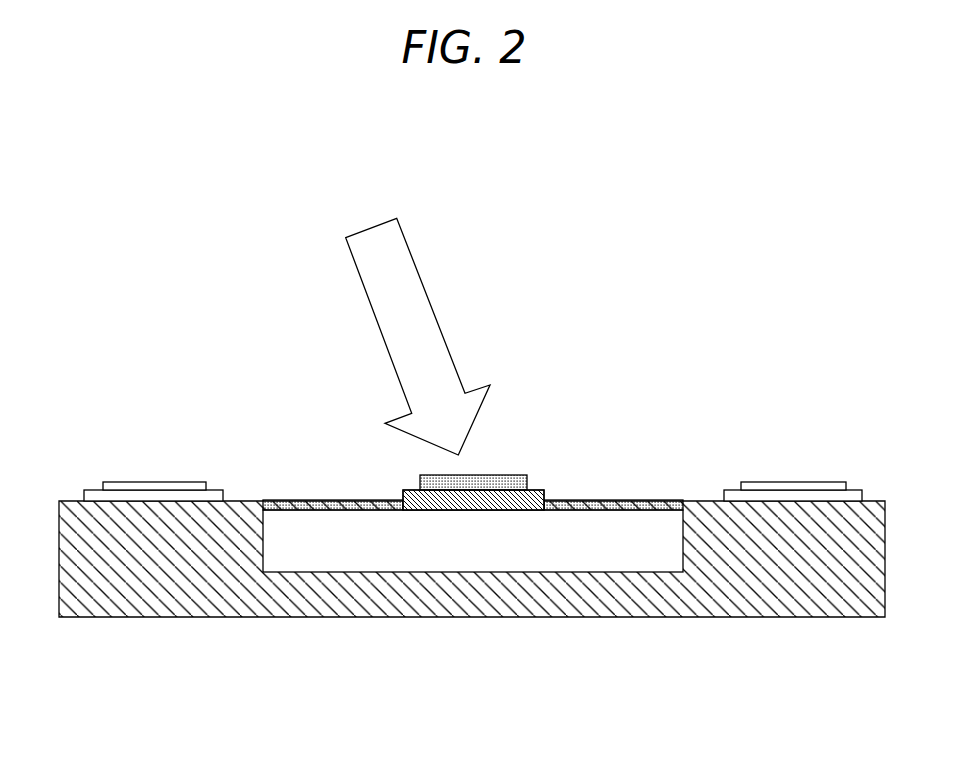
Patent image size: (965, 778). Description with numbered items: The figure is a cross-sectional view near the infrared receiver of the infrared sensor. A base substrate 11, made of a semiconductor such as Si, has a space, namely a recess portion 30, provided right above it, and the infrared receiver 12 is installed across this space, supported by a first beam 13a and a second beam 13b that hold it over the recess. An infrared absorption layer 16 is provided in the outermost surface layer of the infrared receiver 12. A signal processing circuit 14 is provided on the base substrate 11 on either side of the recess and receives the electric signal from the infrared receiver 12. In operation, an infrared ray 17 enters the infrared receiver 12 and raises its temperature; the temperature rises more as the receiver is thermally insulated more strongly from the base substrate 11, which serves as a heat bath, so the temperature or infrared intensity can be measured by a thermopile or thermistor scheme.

The base substrate 11 is at (648, 597).
The recess portion 30 is at (355, 542).
The first beam 13a is at (355, 500).
The second beam 13b is at (655, 500).
The infrared receiver 12 is at (535, 490).
The infrared absorption layer 16 is at (483, 480).
The signal processing circuit 14 is at (157, 495).
The infrared ray 17 is at (385, 252).